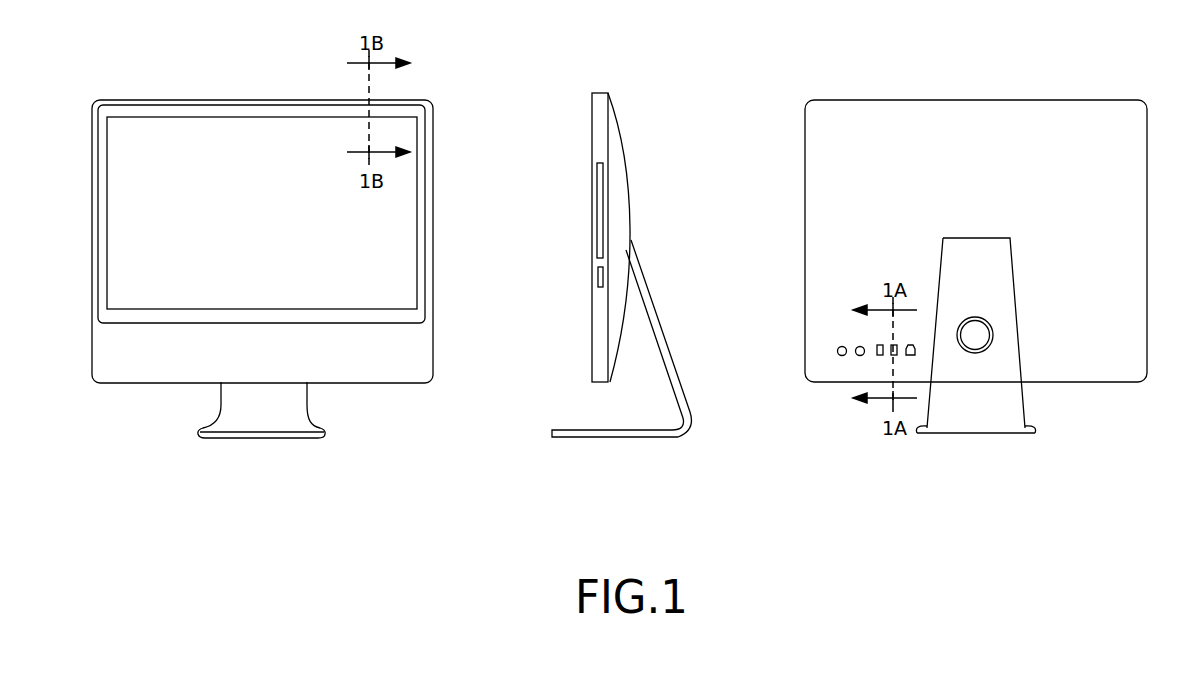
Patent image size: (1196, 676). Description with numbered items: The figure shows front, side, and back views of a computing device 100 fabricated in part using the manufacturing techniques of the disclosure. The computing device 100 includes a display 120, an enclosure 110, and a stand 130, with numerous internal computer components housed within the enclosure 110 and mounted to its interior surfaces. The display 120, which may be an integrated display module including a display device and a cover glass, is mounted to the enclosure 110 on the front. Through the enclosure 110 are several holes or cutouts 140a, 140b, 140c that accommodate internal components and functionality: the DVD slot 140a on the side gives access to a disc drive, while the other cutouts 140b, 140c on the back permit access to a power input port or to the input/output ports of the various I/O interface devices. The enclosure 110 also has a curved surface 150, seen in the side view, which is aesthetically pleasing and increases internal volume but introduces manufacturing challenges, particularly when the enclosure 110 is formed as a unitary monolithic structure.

The computing device 100 is at (915, 27).
The enclosure 110 is at (423, 370).
The display 120 is at (118, 122).
The stand 130 is at (308, 413).
The DVD slot 140a is at (598, 175).
The hole or cutout 140b is at (993, 333).
The holes or cutouts 140c is at (857, 358).
The curved surface 150 is at (628, 190).